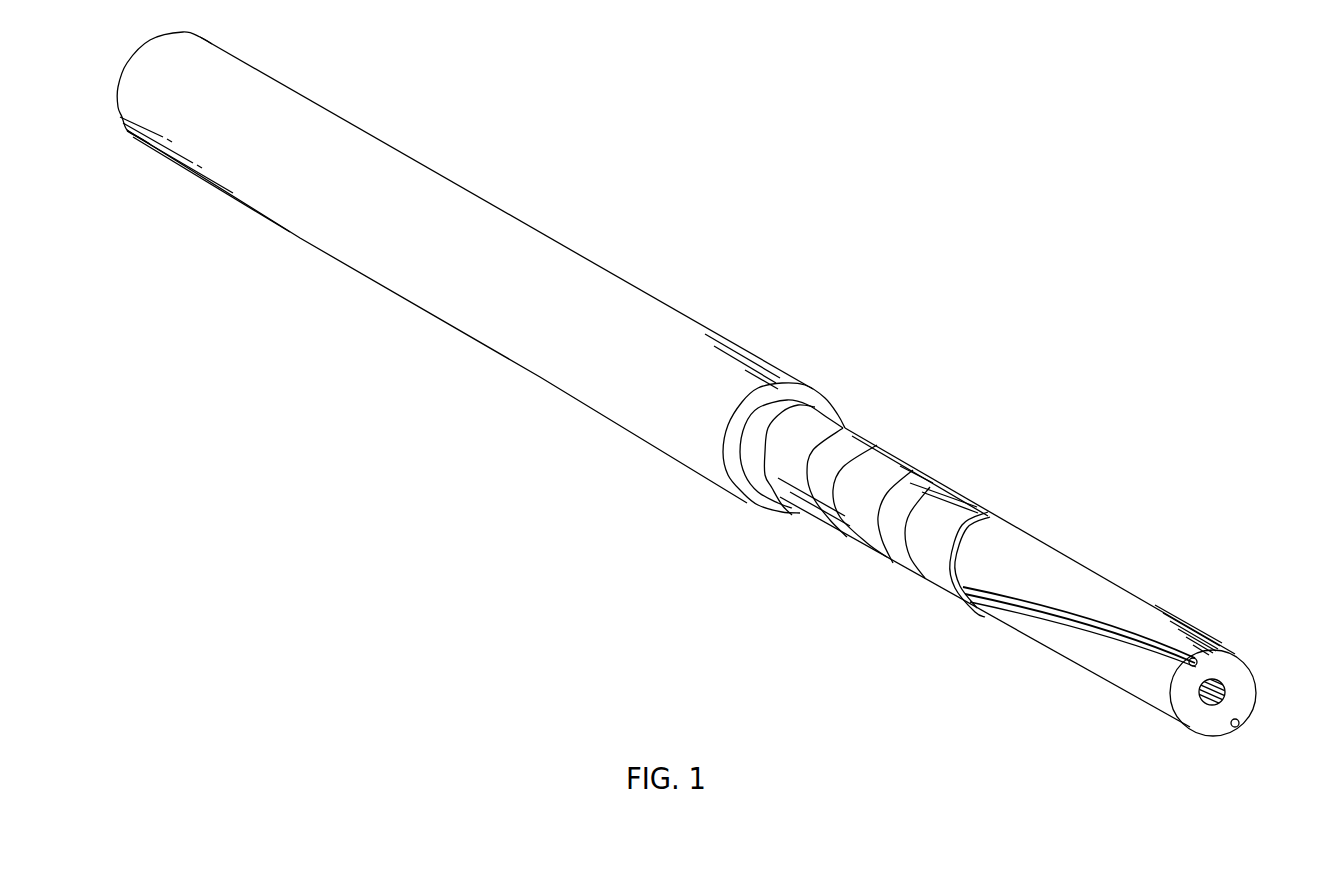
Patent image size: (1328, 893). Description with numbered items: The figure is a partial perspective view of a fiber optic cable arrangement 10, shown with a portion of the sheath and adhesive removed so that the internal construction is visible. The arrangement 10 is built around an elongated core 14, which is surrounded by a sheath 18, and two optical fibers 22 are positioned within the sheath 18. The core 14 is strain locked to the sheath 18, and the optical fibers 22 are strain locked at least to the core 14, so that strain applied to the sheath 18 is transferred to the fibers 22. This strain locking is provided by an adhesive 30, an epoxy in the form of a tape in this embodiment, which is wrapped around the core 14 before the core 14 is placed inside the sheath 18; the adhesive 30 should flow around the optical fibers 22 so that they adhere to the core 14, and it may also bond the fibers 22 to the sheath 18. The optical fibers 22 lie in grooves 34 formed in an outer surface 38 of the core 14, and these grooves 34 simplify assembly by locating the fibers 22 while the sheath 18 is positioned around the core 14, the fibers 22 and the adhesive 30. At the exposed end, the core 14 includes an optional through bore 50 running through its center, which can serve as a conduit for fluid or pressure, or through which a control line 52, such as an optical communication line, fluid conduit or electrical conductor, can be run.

The fiber optic cable arrangement 10 is at (804, 200).
The core 14 is at (1230, 664).
The sheath 18 is at (845, 425).
The optical fiber 22 is at (1050, 608).
The adhesive 30 is at (882, 448).
The grooves 34 is at (1178, 672).
The outer surface 38 is at (1128, 590).
The through bore 50 is at (1208, 704).
The control line 52 is at (1228, 680).